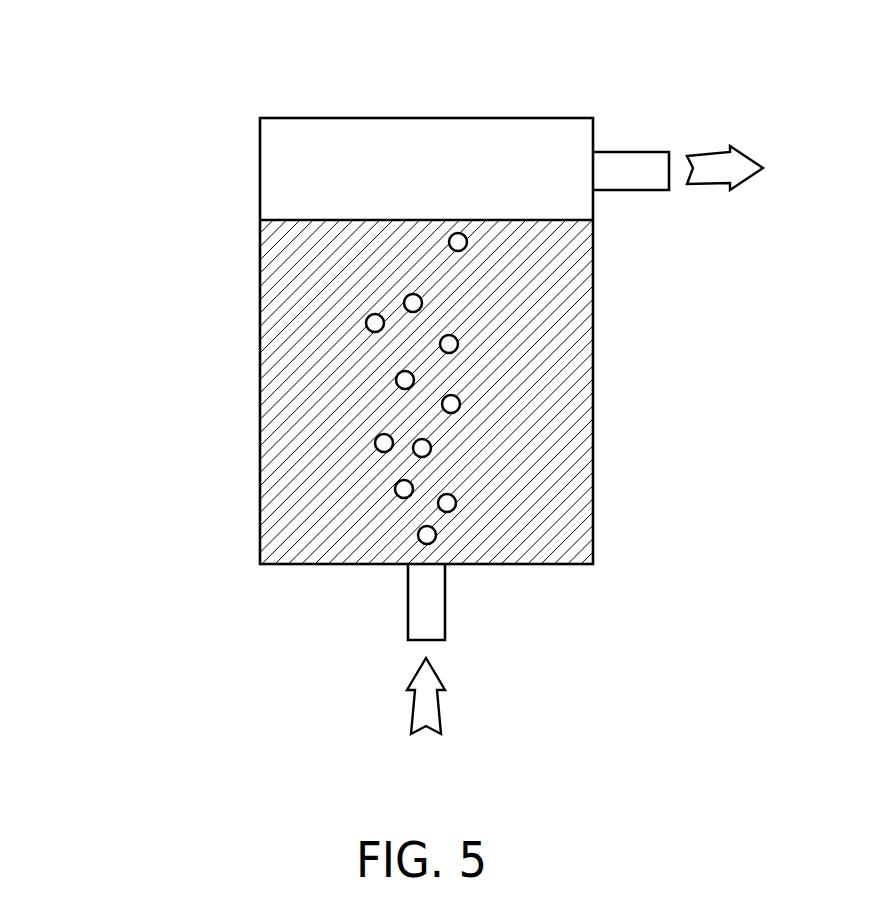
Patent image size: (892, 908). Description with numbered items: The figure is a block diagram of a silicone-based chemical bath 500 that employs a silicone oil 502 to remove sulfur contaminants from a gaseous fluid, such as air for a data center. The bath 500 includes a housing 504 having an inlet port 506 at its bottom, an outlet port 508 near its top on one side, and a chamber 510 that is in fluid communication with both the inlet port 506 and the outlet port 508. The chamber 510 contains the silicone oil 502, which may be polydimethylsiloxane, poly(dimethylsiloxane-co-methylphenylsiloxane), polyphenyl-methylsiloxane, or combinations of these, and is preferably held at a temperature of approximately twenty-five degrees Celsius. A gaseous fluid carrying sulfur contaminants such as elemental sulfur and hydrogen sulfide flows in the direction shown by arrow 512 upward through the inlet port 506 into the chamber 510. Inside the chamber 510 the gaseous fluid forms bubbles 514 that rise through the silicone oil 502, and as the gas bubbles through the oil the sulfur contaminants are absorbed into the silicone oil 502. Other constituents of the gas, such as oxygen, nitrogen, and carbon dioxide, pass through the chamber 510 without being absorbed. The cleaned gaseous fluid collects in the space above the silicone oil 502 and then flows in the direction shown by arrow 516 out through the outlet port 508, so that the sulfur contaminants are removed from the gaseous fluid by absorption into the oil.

The silicone-based chemical bath 500 is at (131, 70).
The silicone oil 502 is at (548, 356).
The housing 504 is at (594, 452).
The inlet port 506 is at (427, 620).
The outlet port 508 is at (627, 173).
The chamber 510 is at (453, 156).
The arrow 512 is at (428, 712).
The bubbles 514 is at (458, 233).
The arrow 516 is at (700, 168).